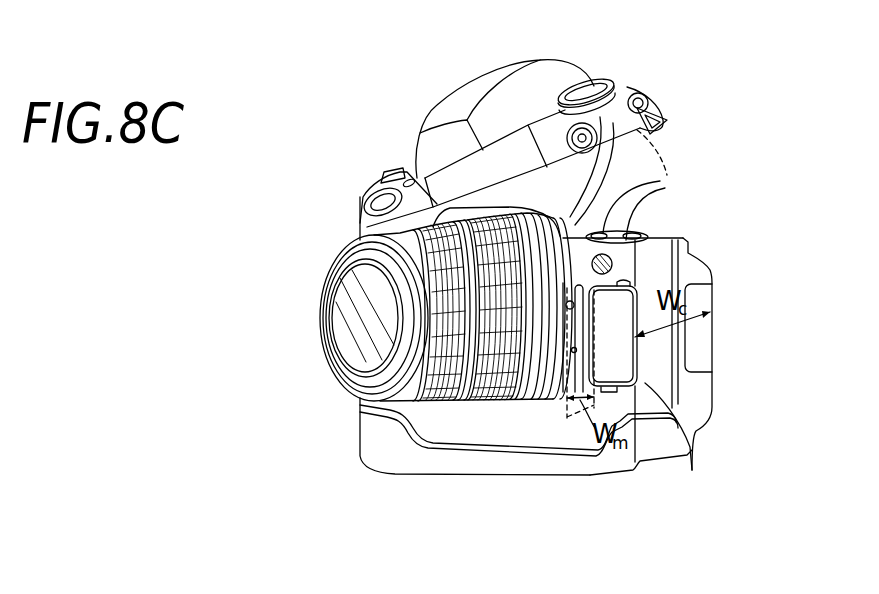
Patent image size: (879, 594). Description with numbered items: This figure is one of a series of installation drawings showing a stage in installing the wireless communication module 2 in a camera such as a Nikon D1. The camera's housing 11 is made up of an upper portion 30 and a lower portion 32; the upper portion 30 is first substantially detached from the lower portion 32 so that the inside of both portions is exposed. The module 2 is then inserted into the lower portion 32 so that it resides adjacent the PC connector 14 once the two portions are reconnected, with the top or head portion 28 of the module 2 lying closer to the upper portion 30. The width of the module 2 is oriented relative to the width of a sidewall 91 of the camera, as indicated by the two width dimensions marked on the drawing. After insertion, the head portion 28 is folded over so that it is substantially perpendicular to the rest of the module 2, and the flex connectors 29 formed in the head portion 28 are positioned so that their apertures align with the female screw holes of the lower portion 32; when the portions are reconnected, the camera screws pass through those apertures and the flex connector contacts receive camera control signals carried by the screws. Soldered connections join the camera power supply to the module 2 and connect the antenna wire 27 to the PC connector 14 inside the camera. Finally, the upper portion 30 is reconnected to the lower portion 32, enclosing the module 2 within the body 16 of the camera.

The wireless communication module 2 is at (573, 408).
The housing 11 is at (682, 432).
The PC connector 14 is at (587, 84).
The body 16 is at (580, 435).
The antenna wire 27 is at (607, 173).
The head portion 28 is at (648, 236).
The flex connectors 29 is at (667, 192).
The upper portion 30 is at (450, 104).
The lower portion 32 is at (712, 353).
The sidewall 91 is at (697, 385).